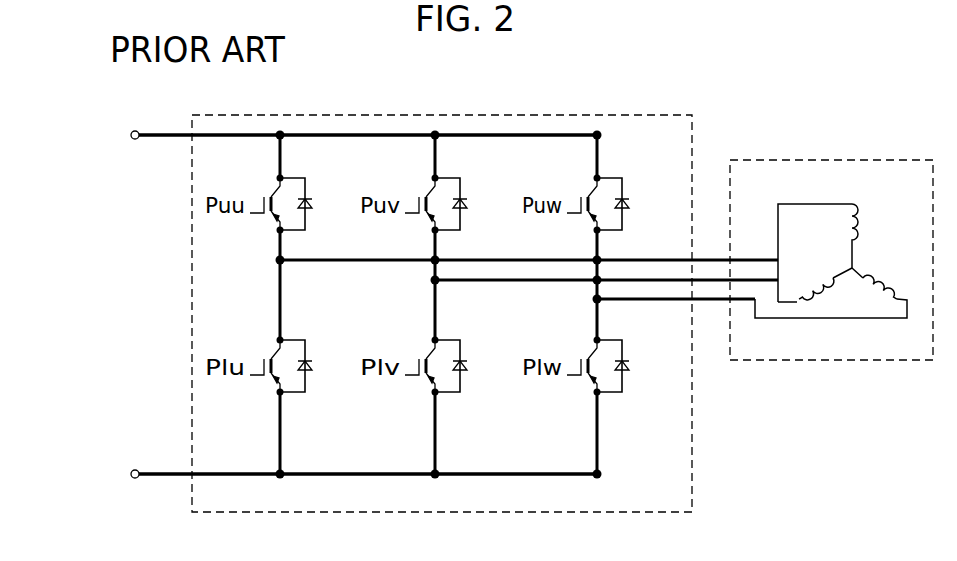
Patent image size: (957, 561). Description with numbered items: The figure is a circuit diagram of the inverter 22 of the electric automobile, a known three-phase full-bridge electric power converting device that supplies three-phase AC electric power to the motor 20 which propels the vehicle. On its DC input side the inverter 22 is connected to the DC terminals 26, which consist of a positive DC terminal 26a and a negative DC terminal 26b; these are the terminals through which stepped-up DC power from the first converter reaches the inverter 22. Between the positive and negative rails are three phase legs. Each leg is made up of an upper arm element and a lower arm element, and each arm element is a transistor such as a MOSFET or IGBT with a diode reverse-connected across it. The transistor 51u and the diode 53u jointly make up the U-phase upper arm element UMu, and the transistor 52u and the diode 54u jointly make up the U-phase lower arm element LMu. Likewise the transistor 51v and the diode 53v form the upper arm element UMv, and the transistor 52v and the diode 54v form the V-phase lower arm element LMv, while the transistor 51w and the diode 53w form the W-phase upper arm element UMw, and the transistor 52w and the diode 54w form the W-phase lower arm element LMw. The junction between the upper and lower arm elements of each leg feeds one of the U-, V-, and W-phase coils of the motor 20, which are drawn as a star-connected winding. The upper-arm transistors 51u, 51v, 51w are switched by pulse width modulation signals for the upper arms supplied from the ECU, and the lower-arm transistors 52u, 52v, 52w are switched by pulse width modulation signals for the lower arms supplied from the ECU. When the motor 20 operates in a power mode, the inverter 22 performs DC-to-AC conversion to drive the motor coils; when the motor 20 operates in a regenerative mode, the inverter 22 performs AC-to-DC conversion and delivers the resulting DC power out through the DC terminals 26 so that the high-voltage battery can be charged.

The motor 20 is at (877, 158).
The inverter 22 is at (566, 113).
The DC terminals 26 is at (84, 268).
The positive DC terminal 26a is at (135, 143).
The negative DC terminal 26b is at (133, 470).
The transistor 51u is at (275, 192).
The transistor 51v is at (430, 192).
The transistor 51w is at (592, 192).
The transistor 52u is at (275, 354).
The transistor 52v is at (430, 354).
The transistor 52w is at (592, 354).
The diode 53u is at (310, 208).
The diode 53v is at (465, 208).
The diode 53w is at (627, 208).
The diode 54u is at (312, 383).
The diode 54v is at (467, 383).
The diode 54w is at (629, 383).
The U-phase upper arm element UMu is at (298, 181).
The V-phase upper arm element UMv is at (453, 181).
The W-phase upper arm element UMw is at (615, 181).
The U-phase lower arm element LMu is at (298, 343).
The V-phase lower arm element LMv is at (453, 343).
The W-phase lower arm element LMw is at (615, 343).